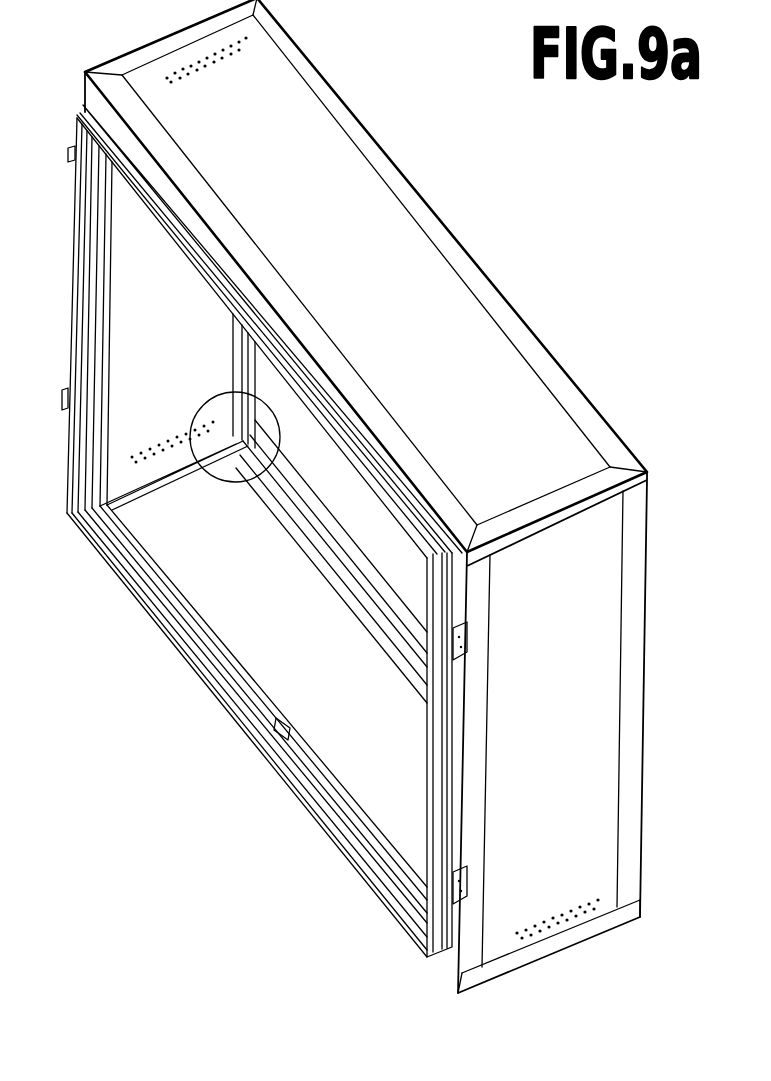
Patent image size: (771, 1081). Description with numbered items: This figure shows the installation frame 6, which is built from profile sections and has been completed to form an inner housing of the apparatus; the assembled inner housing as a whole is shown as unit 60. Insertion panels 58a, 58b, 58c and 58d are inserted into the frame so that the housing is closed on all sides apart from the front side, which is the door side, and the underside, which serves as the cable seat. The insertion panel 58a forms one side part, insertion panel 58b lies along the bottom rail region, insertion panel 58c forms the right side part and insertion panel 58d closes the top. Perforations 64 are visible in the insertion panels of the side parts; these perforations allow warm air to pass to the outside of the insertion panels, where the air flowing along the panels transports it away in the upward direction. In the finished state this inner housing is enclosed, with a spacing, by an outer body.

The installation frame 6 is at (640, 652).
The cabinet 60 is at (550, 322).
The insertion panel 58a is at (135, 352).
The insertion panel 58b is at (337, 490).
The insertion panel 58c is at (593, 727).
The insertion panel 58d is at (380, 215).
The perforations 64 is at (583, 900).